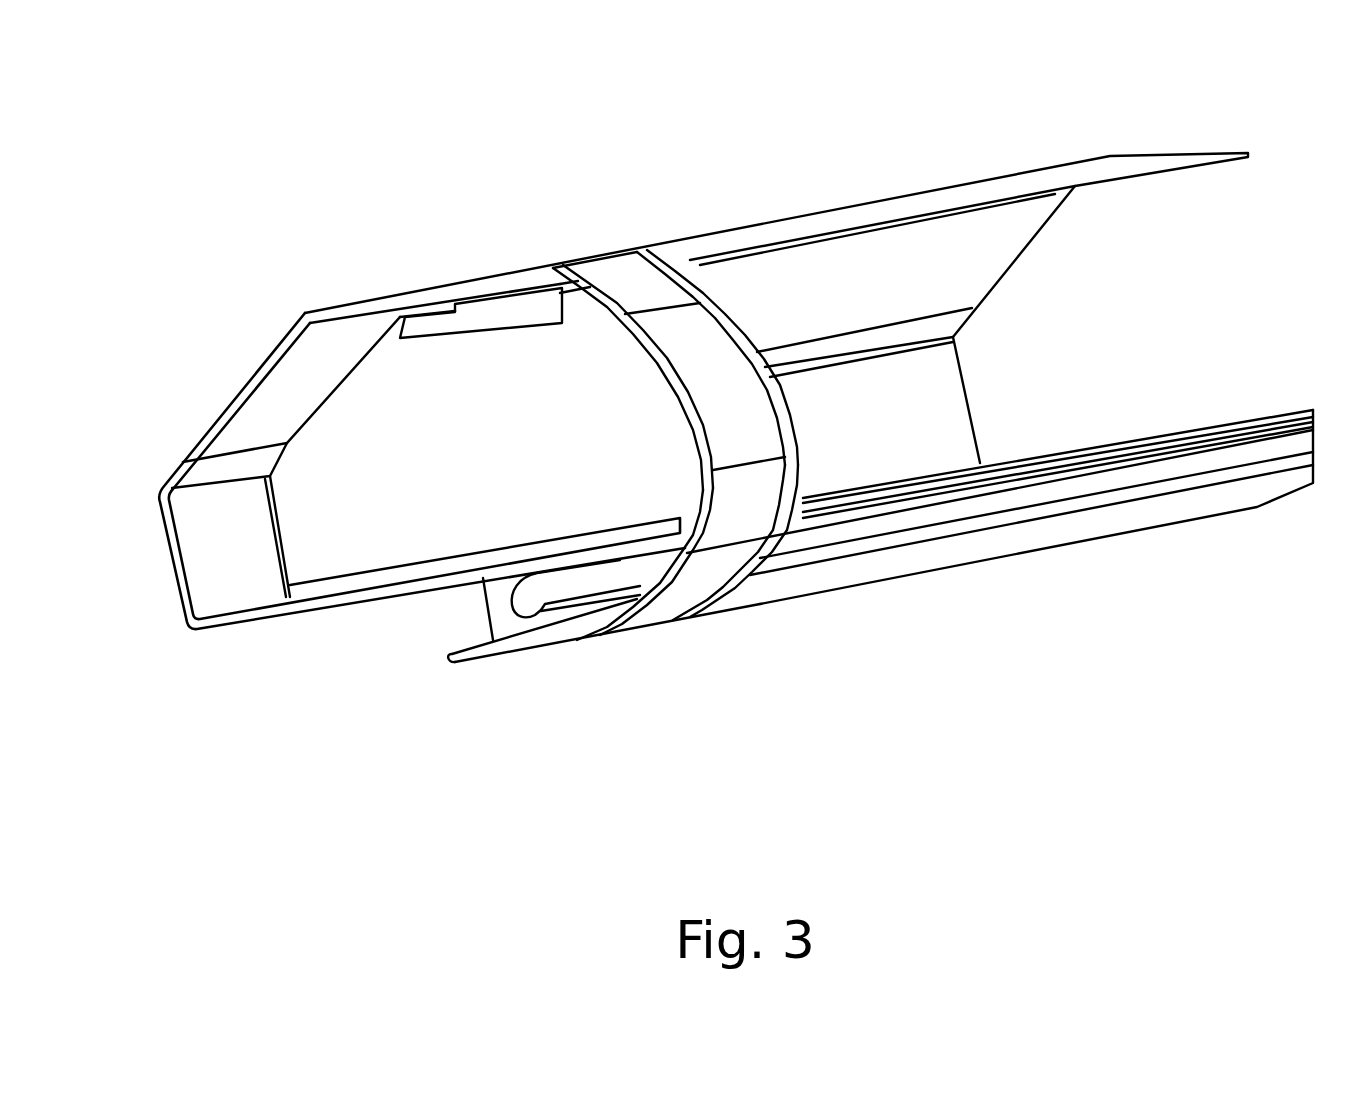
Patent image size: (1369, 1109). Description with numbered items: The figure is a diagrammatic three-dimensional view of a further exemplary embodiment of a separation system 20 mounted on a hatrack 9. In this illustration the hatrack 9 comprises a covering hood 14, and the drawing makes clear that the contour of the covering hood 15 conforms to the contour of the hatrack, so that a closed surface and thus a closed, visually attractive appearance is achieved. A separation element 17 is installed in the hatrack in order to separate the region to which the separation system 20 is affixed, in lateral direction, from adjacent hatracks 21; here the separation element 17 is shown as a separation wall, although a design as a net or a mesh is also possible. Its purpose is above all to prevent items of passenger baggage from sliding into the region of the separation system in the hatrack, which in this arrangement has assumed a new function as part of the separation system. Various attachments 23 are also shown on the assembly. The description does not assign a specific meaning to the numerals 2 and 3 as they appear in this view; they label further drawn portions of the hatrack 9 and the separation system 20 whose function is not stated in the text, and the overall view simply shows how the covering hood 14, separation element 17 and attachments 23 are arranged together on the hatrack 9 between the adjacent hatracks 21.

The separation system 20 is at (233, 178).
The adjacent hatracks 21 is at (1204, 217).
The rail body 2 is at (1231, 324).
The hatrack 9 is at (222, 402).
The housing 3 is at (283, 562).
The attachments 23 is at (505, 318).
The separation element 17 is at (342, 563).
The covering hood 14 is at (670, 333).
The covering hood 15 is at (763, 503).